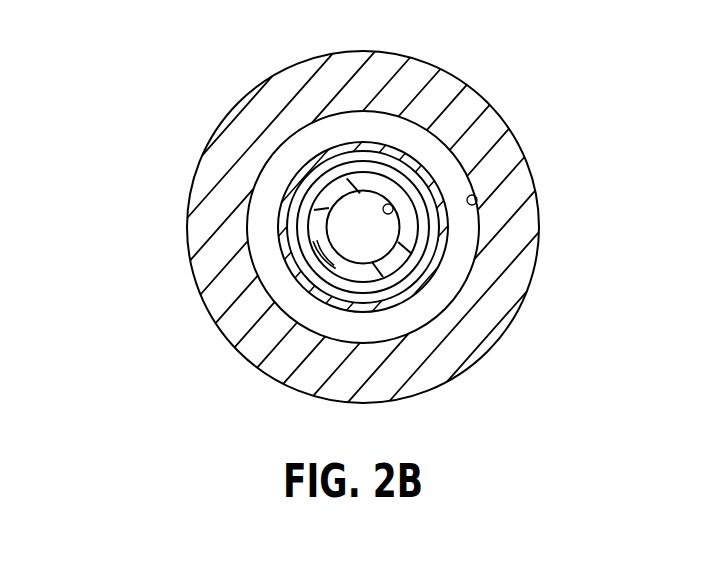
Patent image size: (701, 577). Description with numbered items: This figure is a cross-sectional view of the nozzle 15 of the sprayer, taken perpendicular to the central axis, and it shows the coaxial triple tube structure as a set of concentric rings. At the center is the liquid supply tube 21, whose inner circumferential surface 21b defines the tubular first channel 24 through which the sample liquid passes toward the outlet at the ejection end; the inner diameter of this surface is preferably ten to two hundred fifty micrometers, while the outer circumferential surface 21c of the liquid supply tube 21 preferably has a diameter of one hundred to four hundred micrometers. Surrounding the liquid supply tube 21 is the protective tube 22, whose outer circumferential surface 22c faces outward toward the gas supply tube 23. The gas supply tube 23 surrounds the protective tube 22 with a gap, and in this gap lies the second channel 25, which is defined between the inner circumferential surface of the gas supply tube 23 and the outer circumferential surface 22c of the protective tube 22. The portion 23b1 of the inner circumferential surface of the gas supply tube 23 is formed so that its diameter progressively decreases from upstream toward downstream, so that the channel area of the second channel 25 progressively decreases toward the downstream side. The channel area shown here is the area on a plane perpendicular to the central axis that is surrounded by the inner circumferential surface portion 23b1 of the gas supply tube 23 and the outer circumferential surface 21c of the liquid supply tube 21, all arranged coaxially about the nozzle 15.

The nozzle 15 is at (157, 71).
The liquid supply tube 21 is at (372, 275).
The inner circumferential surface of the liquid supply tube 21b is at (392, 206).
The outer circumferential surface of the liquid supply tube 21c is at (308, 218).
The protective tube 22 is at (428, 266).
The outer circumferential surface of the protective tube 22c is at (308, 157).
The gas supply tube 23 is at (522, 257).
The portion of the inner circumferential surface of the gas supply tube 23b1 is at (477, 199).
The first channel 24 is at (378, 247).
The second channel 25 is at (267, 263).